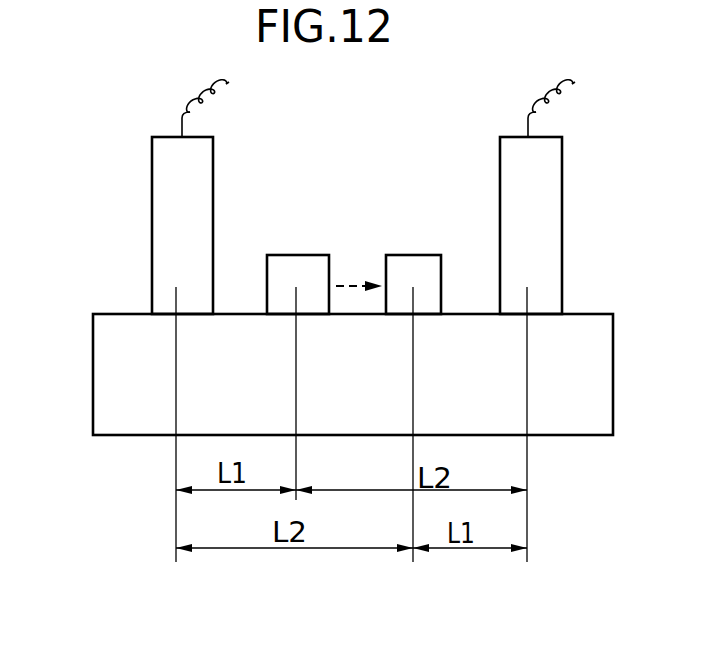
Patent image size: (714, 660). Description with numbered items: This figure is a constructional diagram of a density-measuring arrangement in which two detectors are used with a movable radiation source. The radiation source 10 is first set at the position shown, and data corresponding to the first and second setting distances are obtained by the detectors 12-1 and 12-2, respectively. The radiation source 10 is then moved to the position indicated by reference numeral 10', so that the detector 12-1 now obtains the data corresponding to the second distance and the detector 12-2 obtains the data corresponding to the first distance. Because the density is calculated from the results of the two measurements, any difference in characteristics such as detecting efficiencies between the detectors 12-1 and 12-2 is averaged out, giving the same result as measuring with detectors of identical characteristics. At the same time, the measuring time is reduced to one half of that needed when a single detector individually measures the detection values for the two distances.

The detector 12-1 is at (162, 136).
The detector 12-2 is at (508, 137).
The radiation source 10 is at (298, 345).
The radiation source at moved position 10' is at (413, 376).